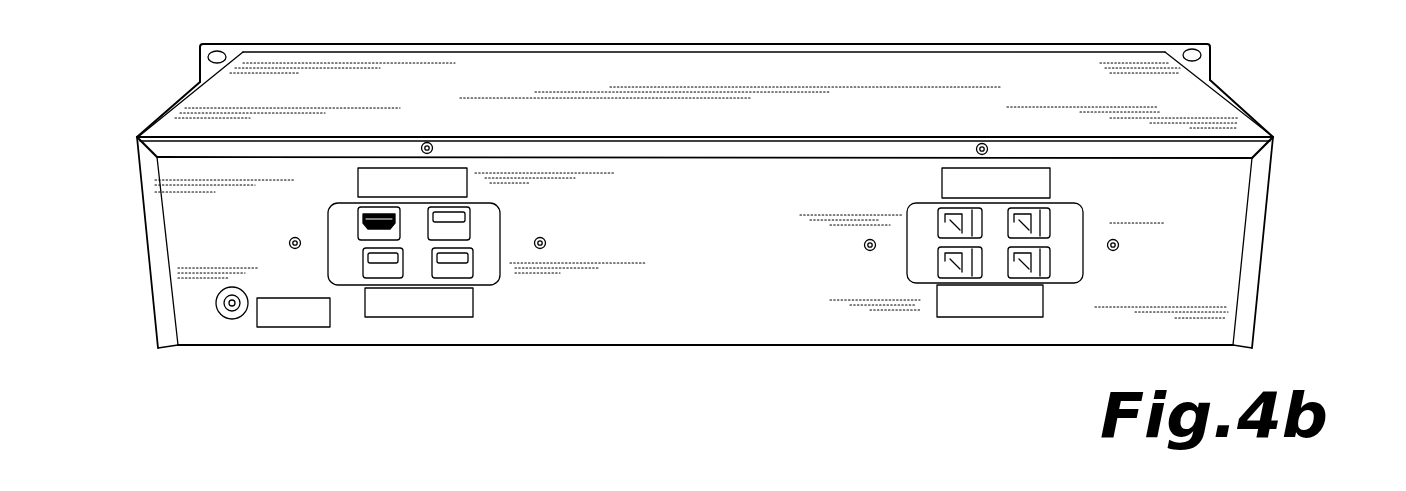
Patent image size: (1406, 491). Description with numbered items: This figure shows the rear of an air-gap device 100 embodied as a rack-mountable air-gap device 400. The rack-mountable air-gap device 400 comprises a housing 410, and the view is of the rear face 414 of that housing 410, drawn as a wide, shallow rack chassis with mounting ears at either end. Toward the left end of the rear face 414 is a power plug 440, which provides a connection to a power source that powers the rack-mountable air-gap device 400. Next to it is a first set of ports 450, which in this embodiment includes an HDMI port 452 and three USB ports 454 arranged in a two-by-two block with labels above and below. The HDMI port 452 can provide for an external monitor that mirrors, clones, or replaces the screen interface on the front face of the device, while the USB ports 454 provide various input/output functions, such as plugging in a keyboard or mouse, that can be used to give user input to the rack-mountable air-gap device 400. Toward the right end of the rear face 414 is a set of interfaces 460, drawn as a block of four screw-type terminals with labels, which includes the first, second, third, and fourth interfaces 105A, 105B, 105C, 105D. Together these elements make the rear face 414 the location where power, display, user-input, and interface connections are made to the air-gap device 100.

The air-gap device 100 is at (1274, 103).
The rack-mountable air-gap device 400 is at (1253, 70).
The housing 410 is at (174, 104).
The rear face 414 is at (1268, 205).
The power plug 440 is at (224, 312).
The first set of ports 450 is at (419, 217).
The HDMI port 452 is at (362, 228).
The USB ports 454 is at (366, 268).
The set of interfaces 460 is at (987, 215).
The first interface 105A is at (1050, 272).
The second interface 105B is at (940, 228).
The third interface 105C is at (1050, 230).
The fourth interface 105D is at (940, 262).